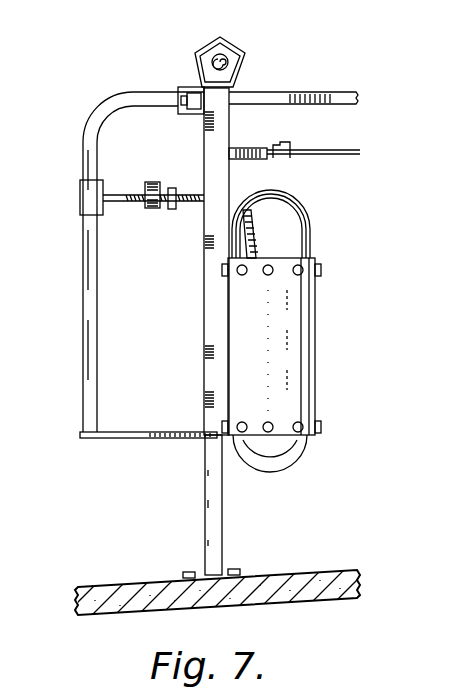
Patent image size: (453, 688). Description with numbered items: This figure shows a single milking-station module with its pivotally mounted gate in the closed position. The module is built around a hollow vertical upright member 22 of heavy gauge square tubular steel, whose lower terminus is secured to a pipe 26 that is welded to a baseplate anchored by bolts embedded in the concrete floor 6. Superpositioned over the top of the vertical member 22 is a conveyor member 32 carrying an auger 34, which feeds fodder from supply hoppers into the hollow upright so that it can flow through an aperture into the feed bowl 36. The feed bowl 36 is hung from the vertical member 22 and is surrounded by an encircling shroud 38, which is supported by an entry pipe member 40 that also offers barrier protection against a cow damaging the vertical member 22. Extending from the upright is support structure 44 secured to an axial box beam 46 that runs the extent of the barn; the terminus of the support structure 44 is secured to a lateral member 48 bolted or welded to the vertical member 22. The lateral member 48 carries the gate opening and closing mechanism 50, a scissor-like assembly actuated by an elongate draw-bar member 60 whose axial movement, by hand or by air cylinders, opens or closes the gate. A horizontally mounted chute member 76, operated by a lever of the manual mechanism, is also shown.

The concrete floor 6 is at (303, 577).
The hollow vertical upright member 22 is at (210, 288).
The pipe 26 is at (208, 495).
The conveyor member 32 is at (240, 52).
The auger 34 is at (202, 52).
The feed bowl 36 is at (295, 448).
The encircling shroud 38 is at (310, 345).
The entry pipe member 40 is at (312, 208).
The support structure 44 is at (92, 122).
The axial box beam 46 is at (192, 85).
The lateral member 48 is at (160, 438).
The gate opening and closing mechanism 50 is at (157, 170).
The draw-bar member 60 is at (142, 198).
The chute member 76 is at (258, 148).